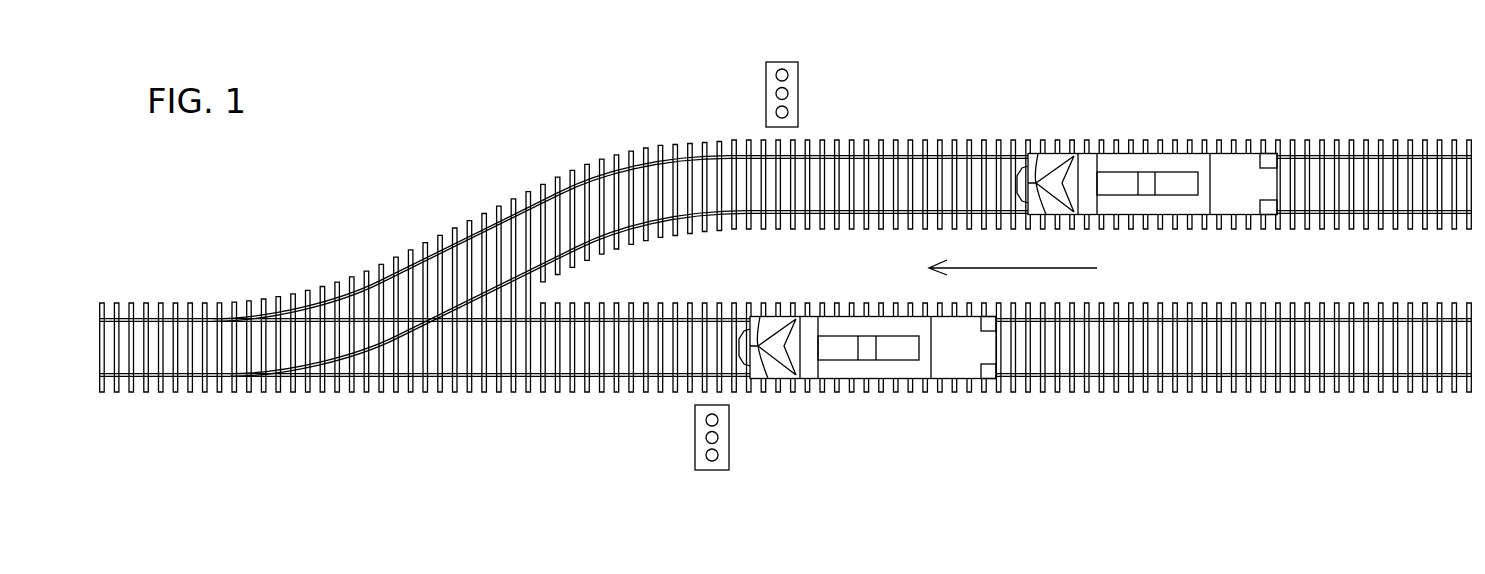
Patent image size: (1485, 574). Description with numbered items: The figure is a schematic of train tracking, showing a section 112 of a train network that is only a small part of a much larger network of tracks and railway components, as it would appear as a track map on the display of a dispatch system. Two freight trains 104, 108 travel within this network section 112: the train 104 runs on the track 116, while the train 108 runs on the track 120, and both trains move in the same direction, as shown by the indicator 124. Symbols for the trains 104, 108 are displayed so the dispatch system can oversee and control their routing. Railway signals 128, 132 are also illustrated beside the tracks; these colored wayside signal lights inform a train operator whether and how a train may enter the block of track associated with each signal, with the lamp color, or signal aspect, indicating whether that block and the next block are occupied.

The freight train 104 is at (1139, 160).
The freight train 108 is at (904, 373).
The train network section 112 is at (477, 158).
The track 116 is at (1373, 157).
The track 120 is at (1377, 375).
The indicator 124 is at (1150, 283).
The railway signal 128 is at (799, 93).
The railway signal 132 is at (730, 437).